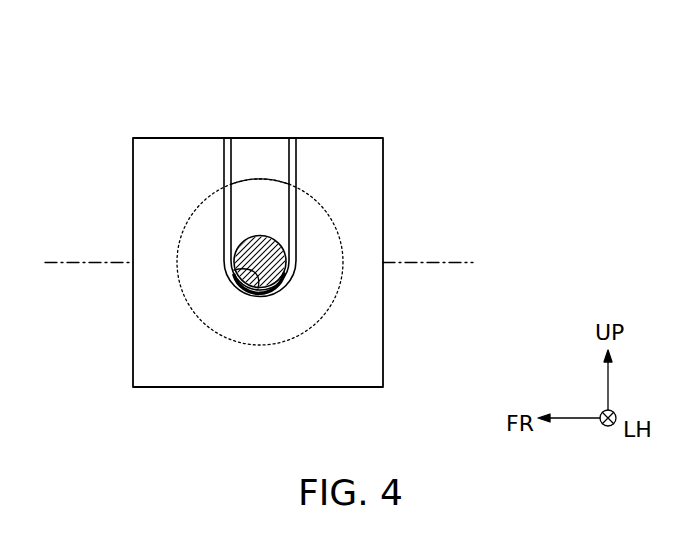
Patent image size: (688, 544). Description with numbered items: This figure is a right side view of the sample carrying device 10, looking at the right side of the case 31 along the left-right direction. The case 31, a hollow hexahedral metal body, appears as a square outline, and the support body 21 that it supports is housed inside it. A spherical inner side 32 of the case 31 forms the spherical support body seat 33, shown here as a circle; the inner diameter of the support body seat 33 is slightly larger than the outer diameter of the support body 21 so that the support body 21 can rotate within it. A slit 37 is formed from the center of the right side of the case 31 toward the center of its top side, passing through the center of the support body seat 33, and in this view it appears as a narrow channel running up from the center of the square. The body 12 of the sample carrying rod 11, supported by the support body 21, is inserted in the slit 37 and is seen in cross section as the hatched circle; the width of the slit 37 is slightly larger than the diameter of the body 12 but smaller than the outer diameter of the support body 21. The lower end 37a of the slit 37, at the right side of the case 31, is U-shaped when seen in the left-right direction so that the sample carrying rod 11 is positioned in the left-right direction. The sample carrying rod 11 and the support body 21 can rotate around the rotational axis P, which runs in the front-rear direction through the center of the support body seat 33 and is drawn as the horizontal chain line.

The sample carrying device 10 is at (368, 113).
The sample carrying rod 11 is at (236, 254).
The body of the sample carrying rod 12 is at (179, 247).
The support body 21 is at (266, 195).
The case 31 is at (360, 168).
The spherical inner side 32 is at (343, 262).
The support body seat 33 is at (329, 283).
The slit 37 is at (233, 162).
The lower end of the slit 37a is at (233, 271).
The rotational axis P is at (62, 266).